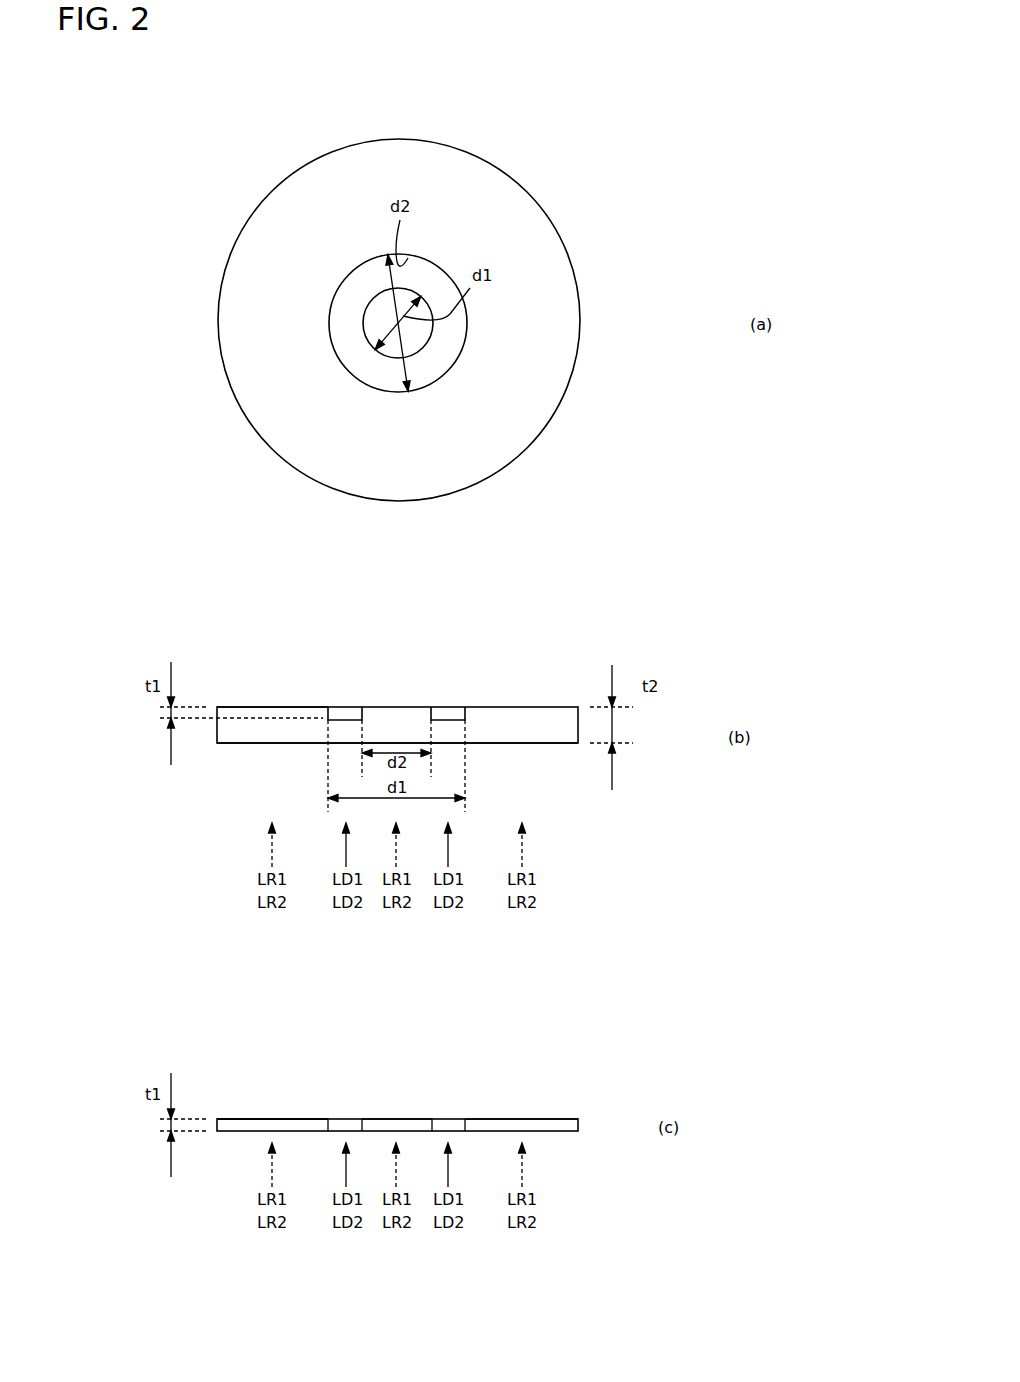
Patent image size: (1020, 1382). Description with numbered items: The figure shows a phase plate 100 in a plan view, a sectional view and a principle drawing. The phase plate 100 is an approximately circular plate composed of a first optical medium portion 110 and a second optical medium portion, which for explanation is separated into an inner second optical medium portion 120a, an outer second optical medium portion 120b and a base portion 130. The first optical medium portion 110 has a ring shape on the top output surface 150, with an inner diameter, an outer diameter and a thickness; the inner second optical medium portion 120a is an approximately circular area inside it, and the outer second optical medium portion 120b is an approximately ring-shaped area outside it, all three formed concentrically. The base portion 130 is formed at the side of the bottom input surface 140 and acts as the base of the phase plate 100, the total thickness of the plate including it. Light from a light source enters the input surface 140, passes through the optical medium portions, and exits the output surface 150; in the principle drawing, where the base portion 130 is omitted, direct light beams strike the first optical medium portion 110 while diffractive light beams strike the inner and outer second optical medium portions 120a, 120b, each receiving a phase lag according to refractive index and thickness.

The phase plate 100 is at (412, 150).
The first optical medium portion 110 is at (445, 337).
The inner second optical medium portion 120a is at (543, 302).
The outer second optical medium portion 120b is at (415, 336).
The base portion 130 is at (530, 737).
The input surface 140 is at (278, 745).
The output surface 150 is at (240, 706).